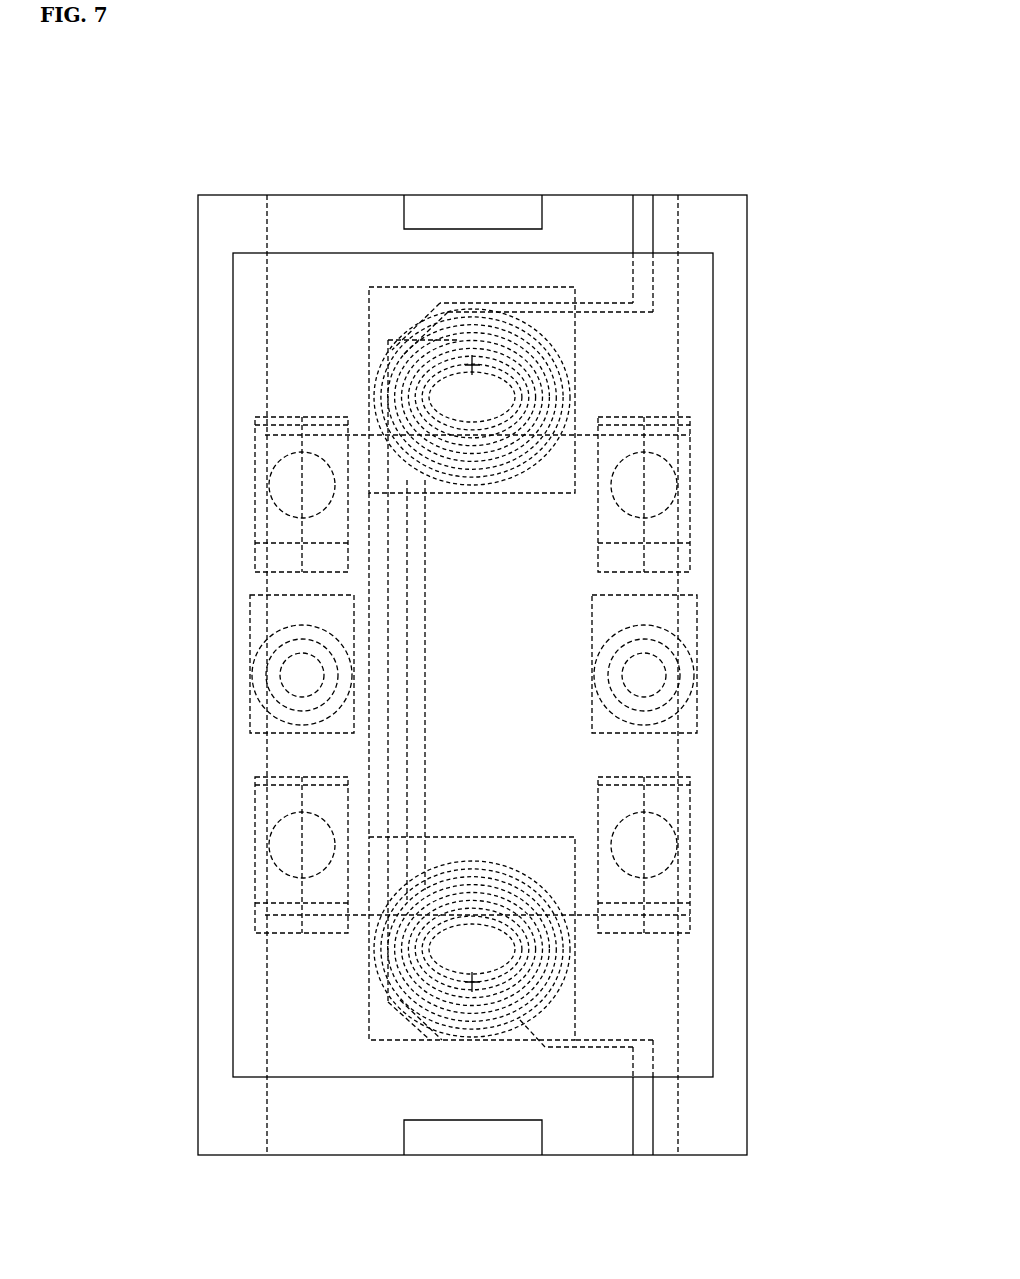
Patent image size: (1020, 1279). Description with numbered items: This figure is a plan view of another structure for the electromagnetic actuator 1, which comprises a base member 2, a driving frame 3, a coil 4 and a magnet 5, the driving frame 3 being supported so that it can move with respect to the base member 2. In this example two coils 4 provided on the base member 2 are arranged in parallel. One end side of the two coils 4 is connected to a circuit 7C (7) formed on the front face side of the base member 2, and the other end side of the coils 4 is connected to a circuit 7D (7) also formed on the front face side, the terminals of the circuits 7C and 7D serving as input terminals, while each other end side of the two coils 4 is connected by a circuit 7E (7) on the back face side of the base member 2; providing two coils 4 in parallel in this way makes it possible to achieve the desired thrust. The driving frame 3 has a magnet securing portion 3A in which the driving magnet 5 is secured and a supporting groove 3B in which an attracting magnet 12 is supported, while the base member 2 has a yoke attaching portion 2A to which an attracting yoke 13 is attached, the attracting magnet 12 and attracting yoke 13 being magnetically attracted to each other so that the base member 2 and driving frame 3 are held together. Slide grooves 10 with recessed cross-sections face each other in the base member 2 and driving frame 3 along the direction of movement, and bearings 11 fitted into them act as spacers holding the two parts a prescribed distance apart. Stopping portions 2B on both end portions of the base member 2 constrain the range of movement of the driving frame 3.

The electromagnetic actuator 1 is at (841, 168).
The base member 2 is at (747, 393).
The yoke attaching portion 2A is at (278, 612).
The stopping portion 2B is at (542, 211).
The driving frame 3 is at (713, 275).
The magnet securing portion 3A is at (610, 663).
The supporting groove 3B is at (472, 653).
The coil 4 is at (557, 323).
The magnet 5 is at (610, 663).
The circuit 7 is at (439, 686).
The circuit 7C is at (633, 1124).
The circuit 7D is at (657, 223).
The circuit 7E is at (388, 576).
The slide groove 10 is at (280, 528).
The bearing 11 is at (280, 455).
The attracting magnet 12 is at (292, 632).
The attracting yoke 13 is at (283, 688).